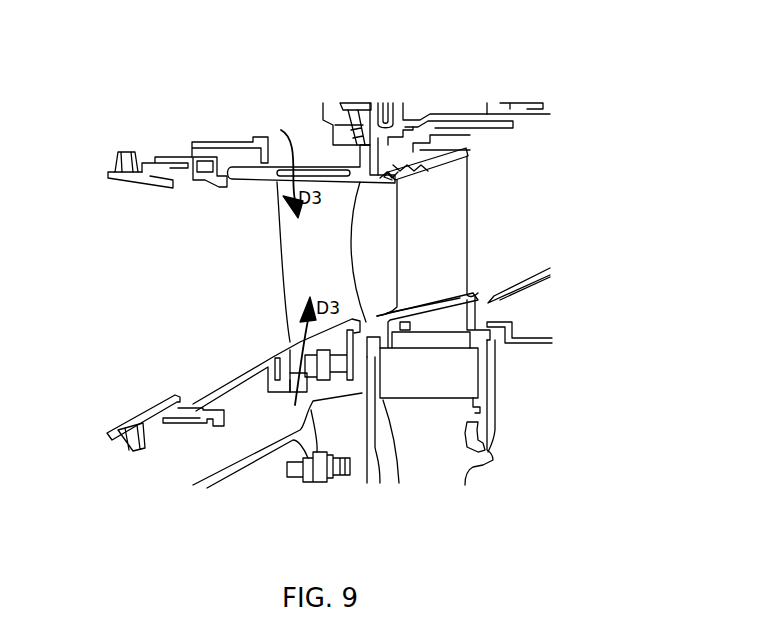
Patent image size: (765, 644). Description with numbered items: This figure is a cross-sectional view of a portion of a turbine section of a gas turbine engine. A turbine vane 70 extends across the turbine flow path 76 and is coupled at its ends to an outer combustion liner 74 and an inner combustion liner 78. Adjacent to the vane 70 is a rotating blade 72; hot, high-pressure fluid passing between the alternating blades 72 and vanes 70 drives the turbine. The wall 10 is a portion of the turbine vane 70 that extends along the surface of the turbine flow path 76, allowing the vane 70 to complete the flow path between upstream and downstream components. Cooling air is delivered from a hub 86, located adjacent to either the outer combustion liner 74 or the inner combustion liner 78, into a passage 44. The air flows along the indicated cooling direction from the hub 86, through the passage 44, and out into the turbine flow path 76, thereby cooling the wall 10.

The wall 10 is at (255, 184).
The passage 44 is at (317, 175).
The turbine vane 70 is at (293, 228).
The blade 72 is at (448, 232).
The outer combustion liner 74 is at (218, 192).
The turbine flow path 76 is at (160, 270).
The inner combustion liner 78 is at (137, 417).
The hub 86 is at (218, 128).